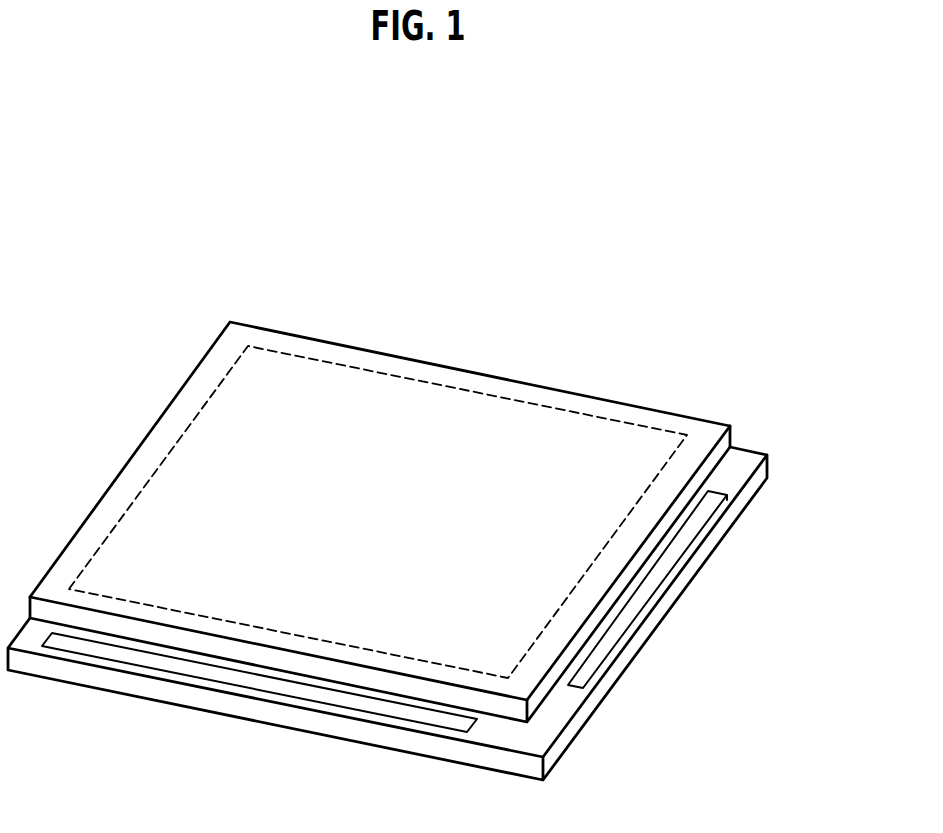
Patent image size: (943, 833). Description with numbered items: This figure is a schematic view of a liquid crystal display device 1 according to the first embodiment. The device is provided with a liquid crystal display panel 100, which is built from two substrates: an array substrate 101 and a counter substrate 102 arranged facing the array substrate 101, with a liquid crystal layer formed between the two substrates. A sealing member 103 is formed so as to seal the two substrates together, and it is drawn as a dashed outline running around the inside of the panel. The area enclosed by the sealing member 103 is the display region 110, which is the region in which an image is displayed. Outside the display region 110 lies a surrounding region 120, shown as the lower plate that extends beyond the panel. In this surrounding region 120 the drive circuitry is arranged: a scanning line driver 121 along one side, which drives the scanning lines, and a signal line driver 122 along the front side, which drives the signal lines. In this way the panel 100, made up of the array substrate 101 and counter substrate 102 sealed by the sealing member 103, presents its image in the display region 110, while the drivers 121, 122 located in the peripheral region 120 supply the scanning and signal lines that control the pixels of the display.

The liquid crystal display device 1 is at (110, 240).
The liquid crystal display panel 100 is at (665, 330).
The array substrate 101 is at (747, 447).
The counter substrate 102 is at (652, 407).
The sealing member 103 is at (315, 358).
The display region 110 is at (470, 413).
The region surrounding the display region 120 is at (747, 465).
The scanning line driver 121 is at (643, 597).
The signal line driver 122 is at (272, 685).